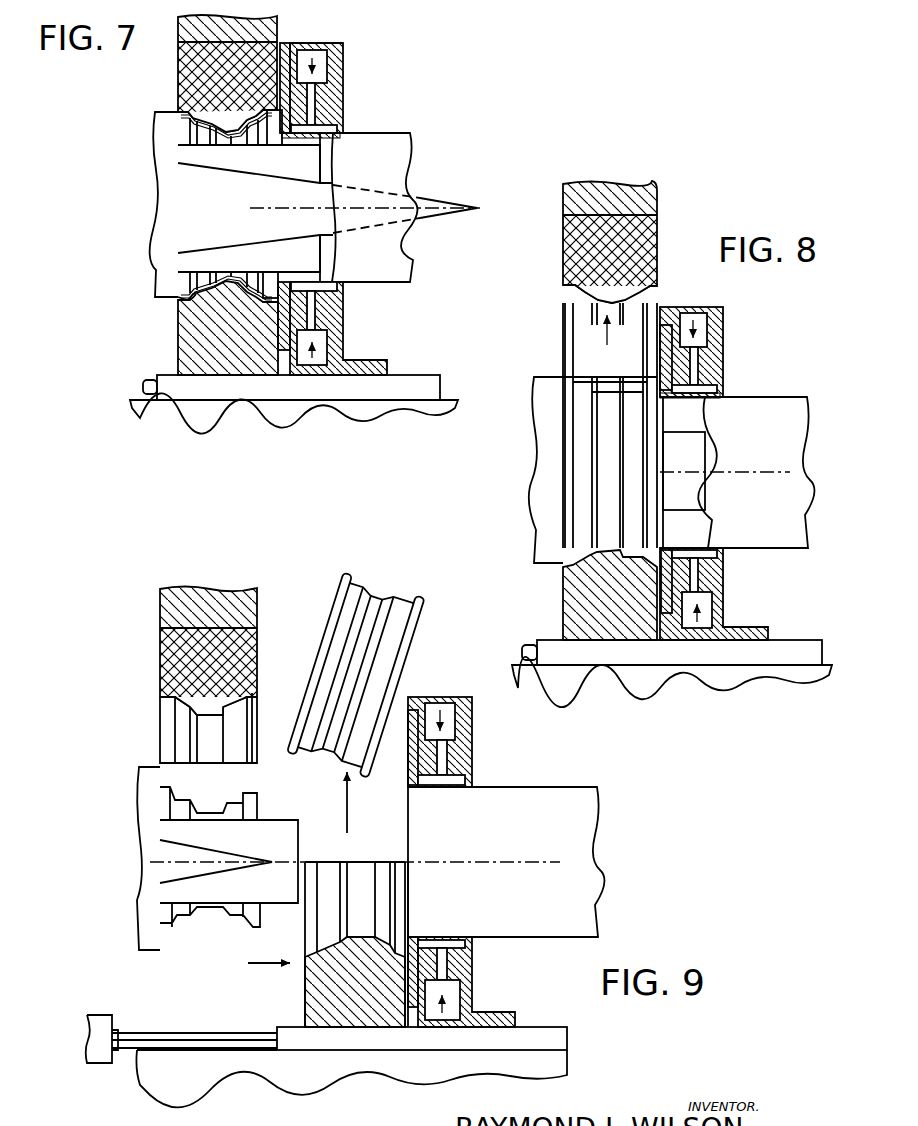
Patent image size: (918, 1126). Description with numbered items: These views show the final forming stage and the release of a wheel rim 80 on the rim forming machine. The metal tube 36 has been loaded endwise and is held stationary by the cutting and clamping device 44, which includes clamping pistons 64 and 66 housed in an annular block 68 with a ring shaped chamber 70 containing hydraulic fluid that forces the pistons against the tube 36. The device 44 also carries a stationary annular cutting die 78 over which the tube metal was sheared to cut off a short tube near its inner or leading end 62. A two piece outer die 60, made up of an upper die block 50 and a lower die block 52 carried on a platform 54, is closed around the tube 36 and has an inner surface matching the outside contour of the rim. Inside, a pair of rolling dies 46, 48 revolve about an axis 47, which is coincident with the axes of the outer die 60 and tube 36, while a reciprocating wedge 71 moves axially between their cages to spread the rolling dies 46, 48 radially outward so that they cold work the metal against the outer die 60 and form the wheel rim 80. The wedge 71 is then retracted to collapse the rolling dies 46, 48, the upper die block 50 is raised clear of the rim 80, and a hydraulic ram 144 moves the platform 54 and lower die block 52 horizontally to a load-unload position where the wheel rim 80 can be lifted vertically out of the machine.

In FIG. 7, the tube 36 is at (395, 133).
In FIG. 8, the tube 36 is at (772, 397).
In FIG. 9, the tube 36 is at (520, 787).
In FIG. 7, the cutting and clamping device 44 is at (346, 72).
In FIG. 8, the cutting and clamping device 44 is at (656, 380).
In FIG. 9, the cutting and clamping device 44 is at (460, 725).
In FIG. 7, the rolling die 46 is at (270, 138).
In FIG. 9, the rolling die 46 is at (160, 790).
In FIG. 7, the axis 47 is at (358, 207).
In FIG. 8, the axis 47 is at (748, 471).
In FIG. 9, the axis 47 is at (468, 862).
In FIG. 7, the rolling die 48 is at (272, 273).
In FIG. 9, the rolling die 48 is at (178, 928).
In FIG. 7, the die block 50 is at (178, 62).
In FIG. 8, the die block 50 is at (659, 215).
In FIG. 9, the die block 50 is at (160, 668).
In FIG. 7, the die block 52 is at (185, 322).
In FIG. 8, the die block 52 is at (572, 600).
In FIG. 9, the die block 52 is at (305, 990).
In FIG. 7, the platform 54 is at (415, 380).
In FIG. 8, the platform 54 is at (790, 650).
In FIG. 9, the platform 54 is at (282, 1030).
In FIG. 7, the outer die 60 is at (174, 83).
In FIG. 8, the outer die 60 is at (662, 238).
In FIG. 9, the outer die 60 is at (159, 649).
In FIG. 7, the inner or leading end 62 is at (192, 299).
In FIG. 7, the clamping piston 64 is at (313, 106).
In FIG. 8, the clamping piston 64 is at (696, 372).
In FIG. 9, the clamping piston 64 is at (441, 757).
In FIG. 7, the clamping piston 66 is at (322, 314).
In FIG. 8, the clamping piston 66 is at (702, 578).
In FIG. 9, the clamping piston 66 is at (465, 966).
In FIG. 7, the annular block 68 is at (330, 43).
In FIG. 7, the ring shaped chamber 70 is at (328, 68).
In FIG. 8, the ring shaped chamber 70 is at (690, 313).
In FIG. 9, the ring shaped chamber 70 is at (455, 725).
In FIG. 7, the reciprocating wedge 71 is at (185, 186).
In FIG. 9, the reciprocating wedge 71 is at (170, 857).
In FIG. 7, the annular cutting die 78 is at (285, 64).
In FIG. 7, the wheel rim 80 is at (190, 293).
In FIG. 8, the wheel rim 80 is at (572, 377).
In FIG. 9, the wheel rim 80 is at (377, 600).
In FIG. 9, the hydraulic ram 144 is at (100, 1018).